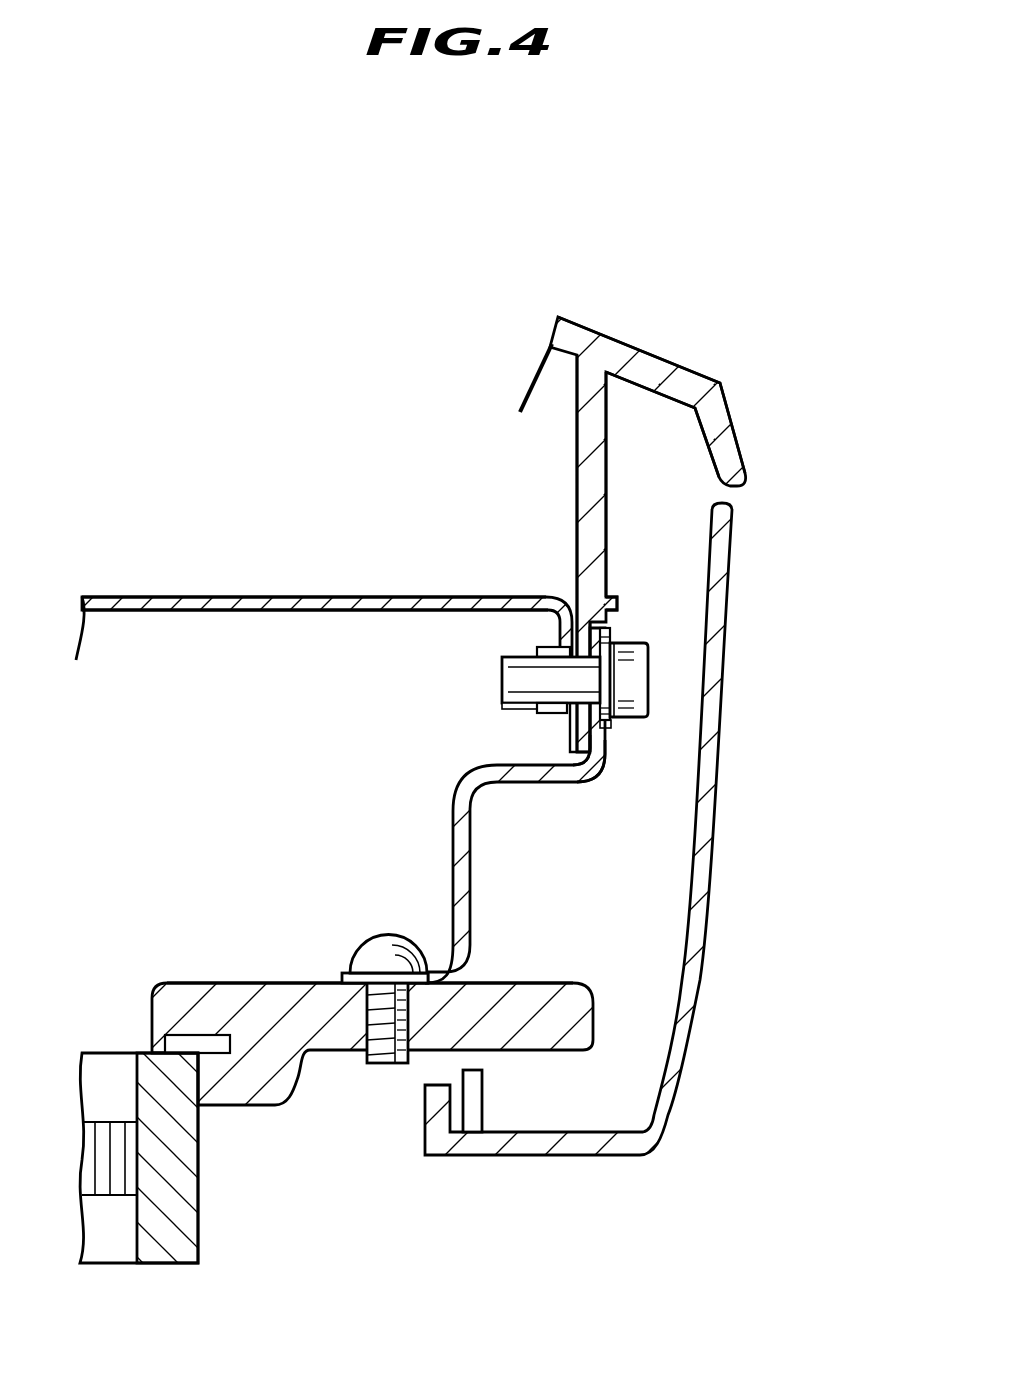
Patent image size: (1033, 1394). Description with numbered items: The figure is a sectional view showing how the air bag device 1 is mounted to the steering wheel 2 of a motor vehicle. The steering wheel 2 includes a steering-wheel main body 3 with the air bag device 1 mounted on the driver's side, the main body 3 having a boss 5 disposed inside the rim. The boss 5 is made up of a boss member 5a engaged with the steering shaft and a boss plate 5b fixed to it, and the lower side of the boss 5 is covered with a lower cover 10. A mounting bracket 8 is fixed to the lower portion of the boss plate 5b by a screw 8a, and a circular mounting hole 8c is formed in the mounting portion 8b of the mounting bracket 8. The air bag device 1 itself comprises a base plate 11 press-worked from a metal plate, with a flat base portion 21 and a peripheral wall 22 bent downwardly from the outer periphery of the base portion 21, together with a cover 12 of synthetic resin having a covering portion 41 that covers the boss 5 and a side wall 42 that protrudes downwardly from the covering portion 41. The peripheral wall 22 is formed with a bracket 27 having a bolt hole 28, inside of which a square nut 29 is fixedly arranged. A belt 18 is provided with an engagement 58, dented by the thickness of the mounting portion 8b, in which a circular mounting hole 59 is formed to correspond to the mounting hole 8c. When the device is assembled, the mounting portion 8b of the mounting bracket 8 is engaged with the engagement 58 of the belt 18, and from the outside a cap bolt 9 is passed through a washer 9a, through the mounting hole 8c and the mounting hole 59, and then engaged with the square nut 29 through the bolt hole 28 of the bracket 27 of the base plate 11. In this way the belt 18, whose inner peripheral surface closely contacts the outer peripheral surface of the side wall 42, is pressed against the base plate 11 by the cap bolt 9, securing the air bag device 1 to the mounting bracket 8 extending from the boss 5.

The air bag device 1 is at (673, 362).
The steering wheel 2 is at (712, 266).
The steering-wheel main body 3 is at (207, 1217).
The boss 5 is at (437, 1231).
The boss member 5a is at (183, 1180).
The boss plate 5b is at (222, 983).
The mounting bracket 8 is at (592, 778).
The screw 8a is at (385, 935).
The mounting portion 8b is at (600, 750).
The mounting hole 8c is at (615, 637).
The cap bolt 9 is at (630, 678).
The washer 9a is at (613, 733).
The lower cover 10 is at (675, 1113).
The base plate 11 is at (170, 597).
The cover 12 is at (587, 325).
The belt 18 is at (610, 623).
The base portion 21 is at (223, 597).
The peripheral wall 22 is at (567, 625).
The bracket 27 is at (528, 650).
The bolt hole 28 is at (555, 712).
The square nut 29 is at (525, 708).
The covering portion 41 is at (618, 340).
The side wall 42 is at (577, 415).
The engagement 58 is at (572, 600).
The mounting hole 59 is at (553, 724).